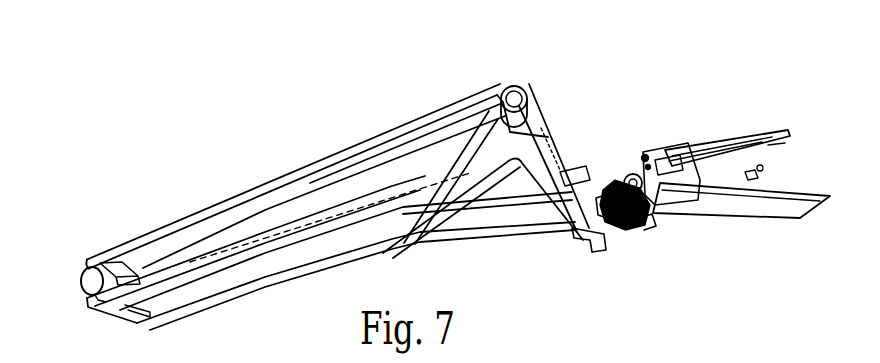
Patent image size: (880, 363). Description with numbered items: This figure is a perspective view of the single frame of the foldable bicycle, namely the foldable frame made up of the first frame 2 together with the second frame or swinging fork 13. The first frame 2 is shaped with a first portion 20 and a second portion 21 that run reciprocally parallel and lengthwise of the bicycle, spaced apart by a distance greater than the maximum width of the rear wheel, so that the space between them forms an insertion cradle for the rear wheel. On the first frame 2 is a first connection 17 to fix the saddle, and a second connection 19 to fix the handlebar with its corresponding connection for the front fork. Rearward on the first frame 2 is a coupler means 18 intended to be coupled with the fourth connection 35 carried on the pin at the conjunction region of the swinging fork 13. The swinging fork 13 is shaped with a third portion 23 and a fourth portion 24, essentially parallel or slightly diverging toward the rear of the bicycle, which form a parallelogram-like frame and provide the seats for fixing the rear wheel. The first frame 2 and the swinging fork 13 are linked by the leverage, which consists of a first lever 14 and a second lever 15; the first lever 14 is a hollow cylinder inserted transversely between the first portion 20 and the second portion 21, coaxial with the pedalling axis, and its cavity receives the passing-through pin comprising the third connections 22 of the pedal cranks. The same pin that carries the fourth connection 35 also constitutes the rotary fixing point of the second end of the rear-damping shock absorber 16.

The first frame 2 is at (242, 123).
The second frame or swinging fork 13 is at (768, 80).
The first lever 14 is at (609, 228).
The second lever 15 is at (633, 225).
The rear-damping shock absorber 16 is at (618, 185).
The first connection 17 is at (500, 93).
The coupler means 18 is at (583, 200).
The second connection 19 is at (80, 283).
The first portion 20 is at (241, 291).
The second portion 21 is at (263, 188).
The third connections 22 is at (590, 246).
The third portion 23 is at (712, 188).
The fourth portion 24 is at (750, 146).
The fourth connection 35 is at (645, 155).